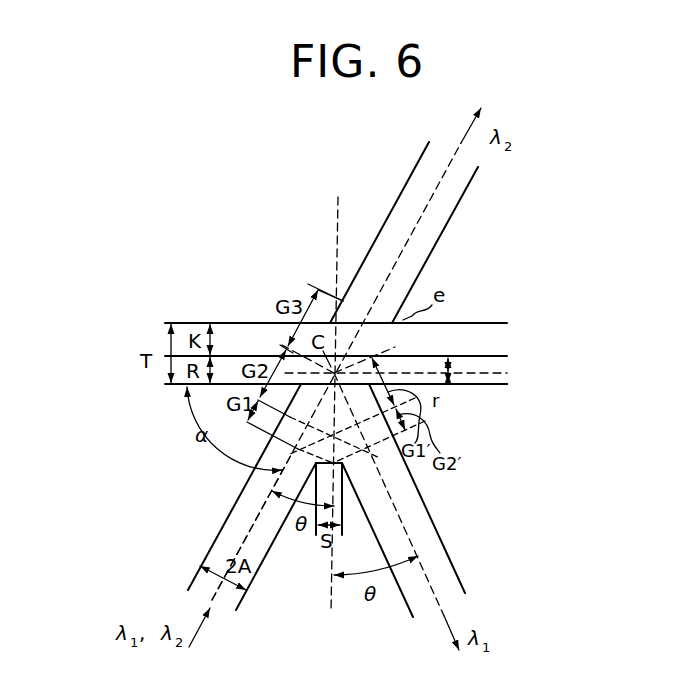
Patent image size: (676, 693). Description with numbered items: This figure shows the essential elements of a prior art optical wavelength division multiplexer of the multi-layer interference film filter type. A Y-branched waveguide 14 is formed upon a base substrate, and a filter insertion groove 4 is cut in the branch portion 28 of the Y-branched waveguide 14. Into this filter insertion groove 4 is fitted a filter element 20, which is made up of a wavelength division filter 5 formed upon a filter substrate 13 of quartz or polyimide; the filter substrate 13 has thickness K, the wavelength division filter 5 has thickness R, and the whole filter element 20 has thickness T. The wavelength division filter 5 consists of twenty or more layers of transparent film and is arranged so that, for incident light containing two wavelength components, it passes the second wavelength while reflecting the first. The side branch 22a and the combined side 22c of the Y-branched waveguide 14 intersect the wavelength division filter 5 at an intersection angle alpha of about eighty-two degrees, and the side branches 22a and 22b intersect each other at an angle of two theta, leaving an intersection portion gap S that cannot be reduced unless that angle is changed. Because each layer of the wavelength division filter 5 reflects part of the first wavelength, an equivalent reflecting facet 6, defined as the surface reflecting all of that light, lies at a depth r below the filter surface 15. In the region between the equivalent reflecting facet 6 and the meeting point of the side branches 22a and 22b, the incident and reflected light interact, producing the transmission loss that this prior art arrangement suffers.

The filter substrate 13 is at (487, 323).
The filter insertion groove 4 is at (462, 327).
The filter surface 15 is at (490, 388).
The wavelength division filter 5 is at (460, 387).
The equivalent reflecting facet 6 is at (482, 375).
The filter element 20 is at (180, 385).
The branch portion 28 is at (324, 319).
The combined side 22c is at (445, 217).
The side branch 22a is at (228, 538).
The side branch 22b is at (448, 573).
The Y-branched waveguide 14 is at (214, 471).